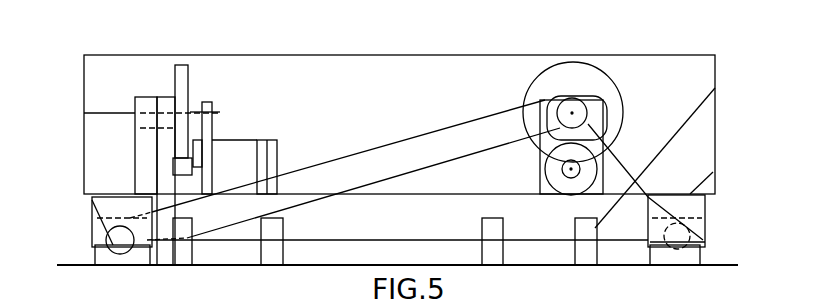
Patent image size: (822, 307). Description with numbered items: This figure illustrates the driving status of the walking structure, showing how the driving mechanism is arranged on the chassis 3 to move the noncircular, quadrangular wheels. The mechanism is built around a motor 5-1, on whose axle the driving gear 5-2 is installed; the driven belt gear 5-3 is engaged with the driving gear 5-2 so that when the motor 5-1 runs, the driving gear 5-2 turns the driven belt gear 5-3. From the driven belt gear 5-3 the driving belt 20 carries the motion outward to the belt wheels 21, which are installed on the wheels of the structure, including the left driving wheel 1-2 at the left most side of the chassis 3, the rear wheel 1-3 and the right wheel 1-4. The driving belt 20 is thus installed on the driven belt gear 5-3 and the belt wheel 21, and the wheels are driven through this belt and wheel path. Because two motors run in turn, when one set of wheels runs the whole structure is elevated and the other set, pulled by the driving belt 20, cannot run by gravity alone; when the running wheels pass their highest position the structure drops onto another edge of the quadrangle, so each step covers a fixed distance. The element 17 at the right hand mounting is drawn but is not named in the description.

The driving belt 20 is at (163, 160).
The belt wheels 21 is at (92, 202).
The left driving wheel 1-2 is at (95, 247).
The motor 5-1 is at (233, 143).
The driving gear 5-2 is at (176, 155).
The driven belt gear 5-3 is at (178, 110).
The rear wheel 1-3 is at (715, 88).
The chassis 3 is at (713, 172).
The bracket 17 is at (705, 197).
The right wheel 1-4 is at (705, 242).